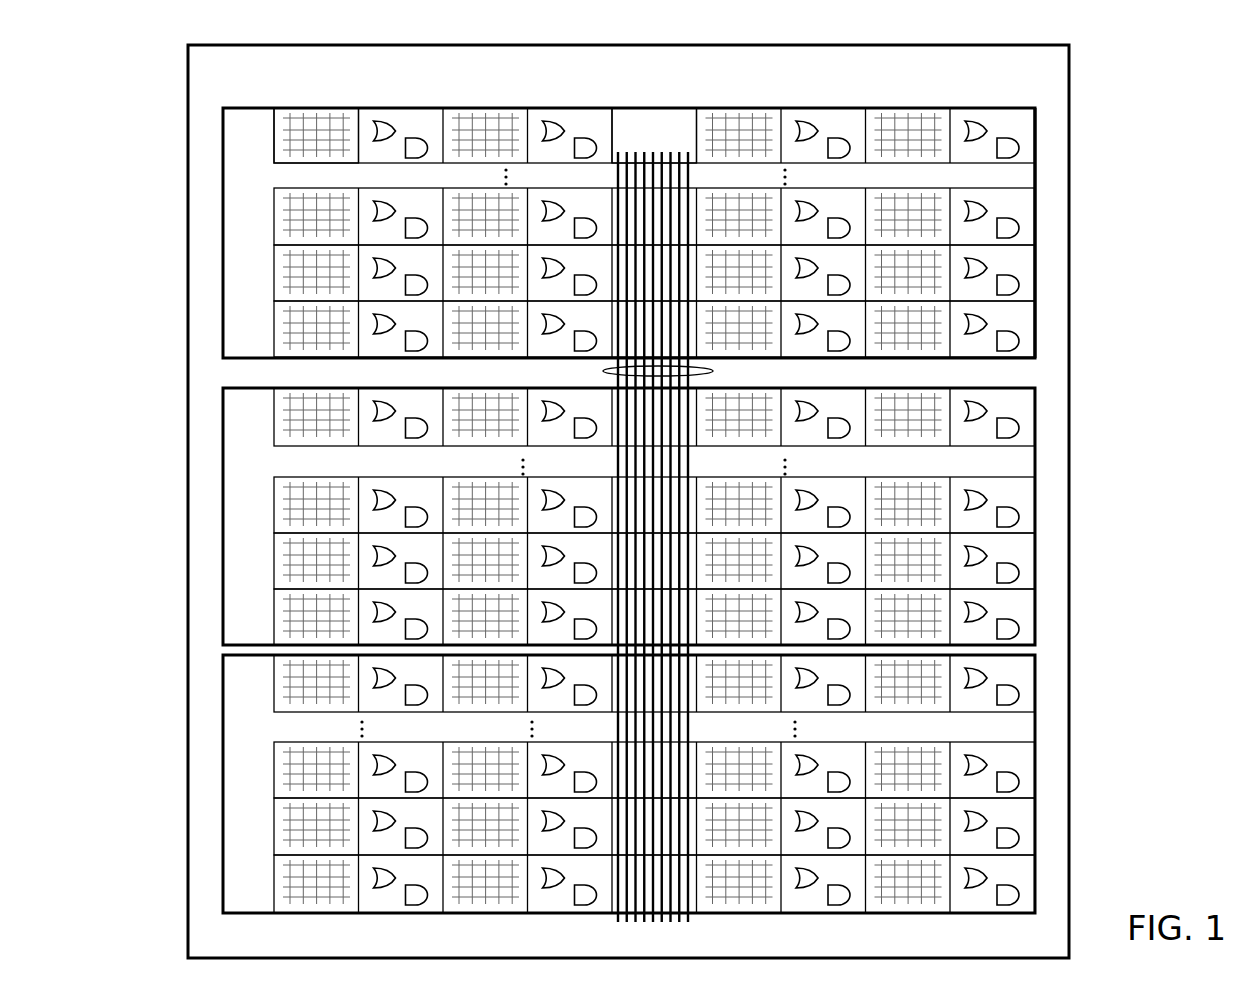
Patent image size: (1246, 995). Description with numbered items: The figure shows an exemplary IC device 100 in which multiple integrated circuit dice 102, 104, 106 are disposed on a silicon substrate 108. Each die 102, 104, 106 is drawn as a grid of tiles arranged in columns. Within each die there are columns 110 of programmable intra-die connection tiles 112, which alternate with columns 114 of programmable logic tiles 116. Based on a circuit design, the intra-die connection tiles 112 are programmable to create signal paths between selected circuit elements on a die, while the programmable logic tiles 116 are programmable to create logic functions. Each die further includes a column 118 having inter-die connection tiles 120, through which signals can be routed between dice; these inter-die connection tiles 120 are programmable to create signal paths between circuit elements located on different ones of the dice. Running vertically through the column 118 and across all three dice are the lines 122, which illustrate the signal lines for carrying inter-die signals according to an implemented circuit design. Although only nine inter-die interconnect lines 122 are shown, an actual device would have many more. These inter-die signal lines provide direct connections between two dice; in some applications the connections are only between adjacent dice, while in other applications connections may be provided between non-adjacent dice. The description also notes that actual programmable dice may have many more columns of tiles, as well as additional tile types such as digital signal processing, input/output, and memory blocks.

The IC device 100 is at (187, 46).
The integrated circuit die 102 is at (262, 239).
The integrated circuit die 104 is at (262, 522).
The integrated circuit die 106 is at (262, 789).
The silicon substrate 108 is at (207, 380).
The columns of programmable intra-die connection tiles 110 is at (326, 93).
The programmable intra-die connection tile 112 is at (274, 129).
The columns of programmable logic tiles 114 is at (414, 93).
The programmable logic tile 116 is at (1035, 133).
The column of inter-die connection tiles 118 is at (664, 93).
The inter-die connection tile 120 is at (618, 197).
The inter-die signal lines 122 is at (603, 371).